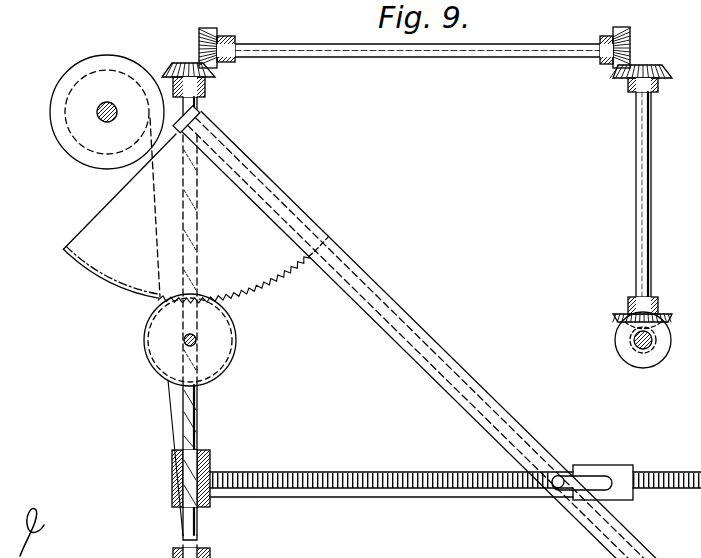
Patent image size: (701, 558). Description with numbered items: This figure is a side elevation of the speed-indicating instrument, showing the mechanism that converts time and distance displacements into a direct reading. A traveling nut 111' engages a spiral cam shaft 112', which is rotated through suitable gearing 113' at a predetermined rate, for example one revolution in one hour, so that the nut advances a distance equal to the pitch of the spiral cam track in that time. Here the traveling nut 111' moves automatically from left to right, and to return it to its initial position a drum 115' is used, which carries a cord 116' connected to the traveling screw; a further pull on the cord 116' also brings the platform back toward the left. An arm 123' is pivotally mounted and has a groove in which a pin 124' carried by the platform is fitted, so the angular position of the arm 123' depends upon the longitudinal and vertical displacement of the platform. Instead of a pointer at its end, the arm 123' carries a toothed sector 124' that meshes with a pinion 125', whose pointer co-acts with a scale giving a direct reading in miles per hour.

The gearing 113' is at (414, 61).
The drum 115' is at (101, 126).
The spiral cam shaft 112' is at (214, 310).
The pinion 125' is at (219, 345).
The toothed sector 124' is at (348, 309).
The arm 123' is at (436, 331).
The cord 116' is at (402, 458).
The traveling nut 111' is at (219, 493).